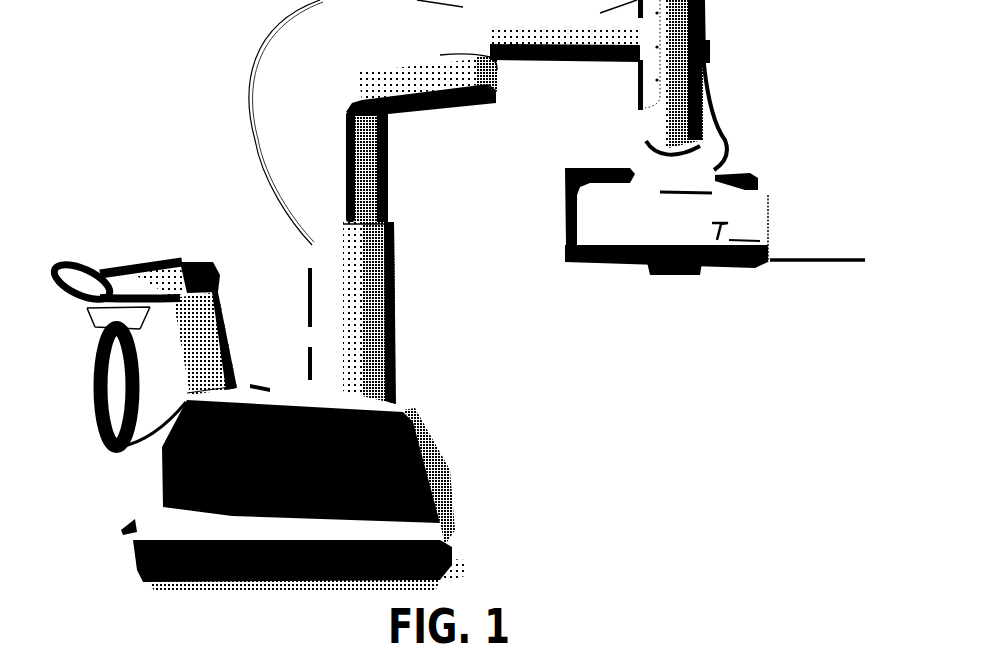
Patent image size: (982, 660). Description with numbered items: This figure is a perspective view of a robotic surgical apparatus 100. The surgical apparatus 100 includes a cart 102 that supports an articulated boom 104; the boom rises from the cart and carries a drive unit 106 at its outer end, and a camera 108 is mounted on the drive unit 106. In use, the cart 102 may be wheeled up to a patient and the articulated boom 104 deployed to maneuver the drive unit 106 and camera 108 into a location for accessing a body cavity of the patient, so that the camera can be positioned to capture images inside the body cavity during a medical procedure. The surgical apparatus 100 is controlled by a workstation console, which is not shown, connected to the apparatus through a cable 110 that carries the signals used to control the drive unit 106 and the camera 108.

The robotic surgical apparatus 100 is at (207, 114).
The cart 102 is at (133, 541).
The articulated boom 104 is at (436, 137).
The drive unit 106 is at (762, 193).
The camera 108 is at (865, 260).
The cable 110 is at (93, 372).